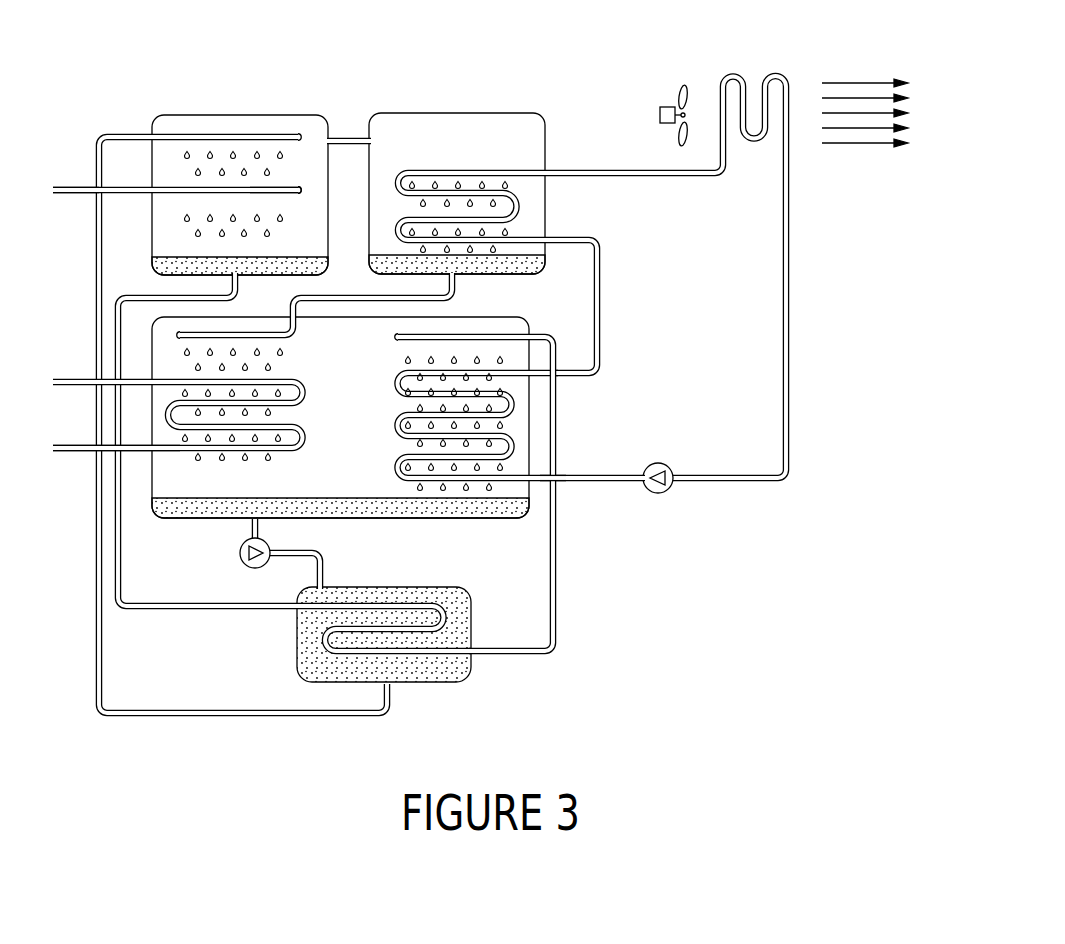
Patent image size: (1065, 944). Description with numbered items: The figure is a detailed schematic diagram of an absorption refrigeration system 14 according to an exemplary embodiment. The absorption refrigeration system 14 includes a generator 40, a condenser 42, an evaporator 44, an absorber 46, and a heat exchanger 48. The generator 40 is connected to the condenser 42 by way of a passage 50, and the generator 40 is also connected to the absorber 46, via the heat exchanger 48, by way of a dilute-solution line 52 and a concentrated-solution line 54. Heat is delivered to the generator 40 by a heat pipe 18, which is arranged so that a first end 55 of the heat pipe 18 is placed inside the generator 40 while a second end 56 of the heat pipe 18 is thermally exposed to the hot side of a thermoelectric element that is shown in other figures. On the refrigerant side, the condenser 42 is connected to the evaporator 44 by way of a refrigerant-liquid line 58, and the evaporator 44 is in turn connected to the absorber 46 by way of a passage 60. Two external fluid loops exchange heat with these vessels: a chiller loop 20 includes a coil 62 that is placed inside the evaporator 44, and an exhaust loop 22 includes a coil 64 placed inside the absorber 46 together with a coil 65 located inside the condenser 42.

The absorption refrigeration system 14 is at (74, 89).
The heat pipe 18 is at (133, 197).
The chiller loop 20 is at (72, 456).
The exhaust loop 22 is at (722, 487).
The generator 40 is at (292, 115).
The condenser 42 is at (524, 112).
The evaporator 44 is at (150, 342).
The absorber 46 is at (525, 318).
The heat exchanger 48 is at (432, 684).
The passage 50 is at (350, 136).
The dilute-solution line 52 is at (95, 545).
The concentrated-solution line 54 is at (198, 612).
The first end 55 is at (298, 195).
The second end 56 is at (68, 197).
The refrigerant-liquid line 58 is at (302, 297).
The passage 60 is at (359, 428).
The coil 62 is at (297, 396).
The coil 64 is at (515, 450).
The coil 65 is at (515, 203).